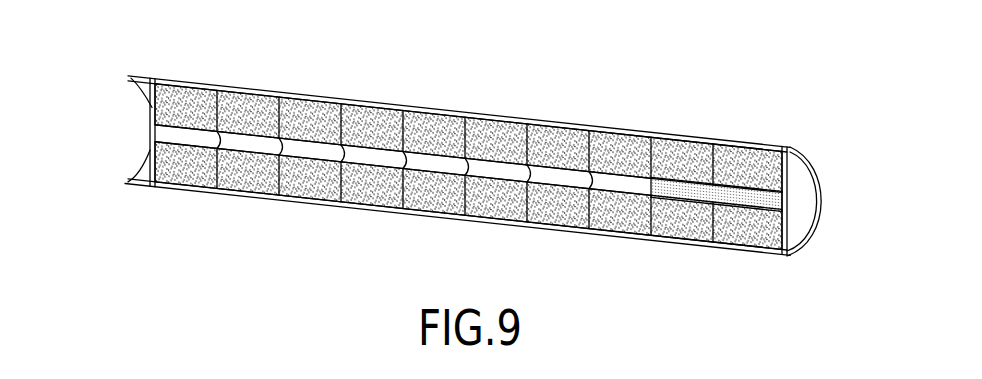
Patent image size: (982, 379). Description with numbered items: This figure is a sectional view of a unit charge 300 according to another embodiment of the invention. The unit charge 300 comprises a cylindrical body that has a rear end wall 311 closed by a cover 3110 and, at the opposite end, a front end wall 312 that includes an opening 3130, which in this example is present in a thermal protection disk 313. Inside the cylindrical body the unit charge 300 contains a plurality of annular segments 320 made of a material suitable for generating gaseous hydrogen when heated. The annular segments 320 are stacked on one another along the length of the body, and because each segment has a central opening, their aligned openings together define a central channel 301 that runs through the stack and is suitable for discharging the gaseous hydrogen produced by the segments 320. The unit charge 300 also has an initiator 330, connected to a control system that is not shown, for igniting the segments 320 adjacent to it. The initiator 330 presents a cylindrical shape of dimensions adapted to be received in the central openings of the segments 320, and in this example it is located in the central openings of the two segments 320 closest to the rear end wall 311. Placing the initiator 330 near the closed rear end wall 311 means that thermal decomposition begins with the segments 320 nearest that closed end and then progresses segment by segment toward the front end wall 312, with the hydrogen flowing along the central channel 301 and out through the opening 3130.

The unit charge 300 is at (531, 94).
The central channel 301 is at (378, 158).
The rear end wall 311 is at (806, 148).
The cover 3110 is at (798, 200).
The front end wall 312 is at (133, 178).
The thermal protection disk 313 is at (142, 83).
The opening 3130 is at (150, 124).
The annular segments 320 is at (238, 198).
The initiator 330 is at (680, 173).